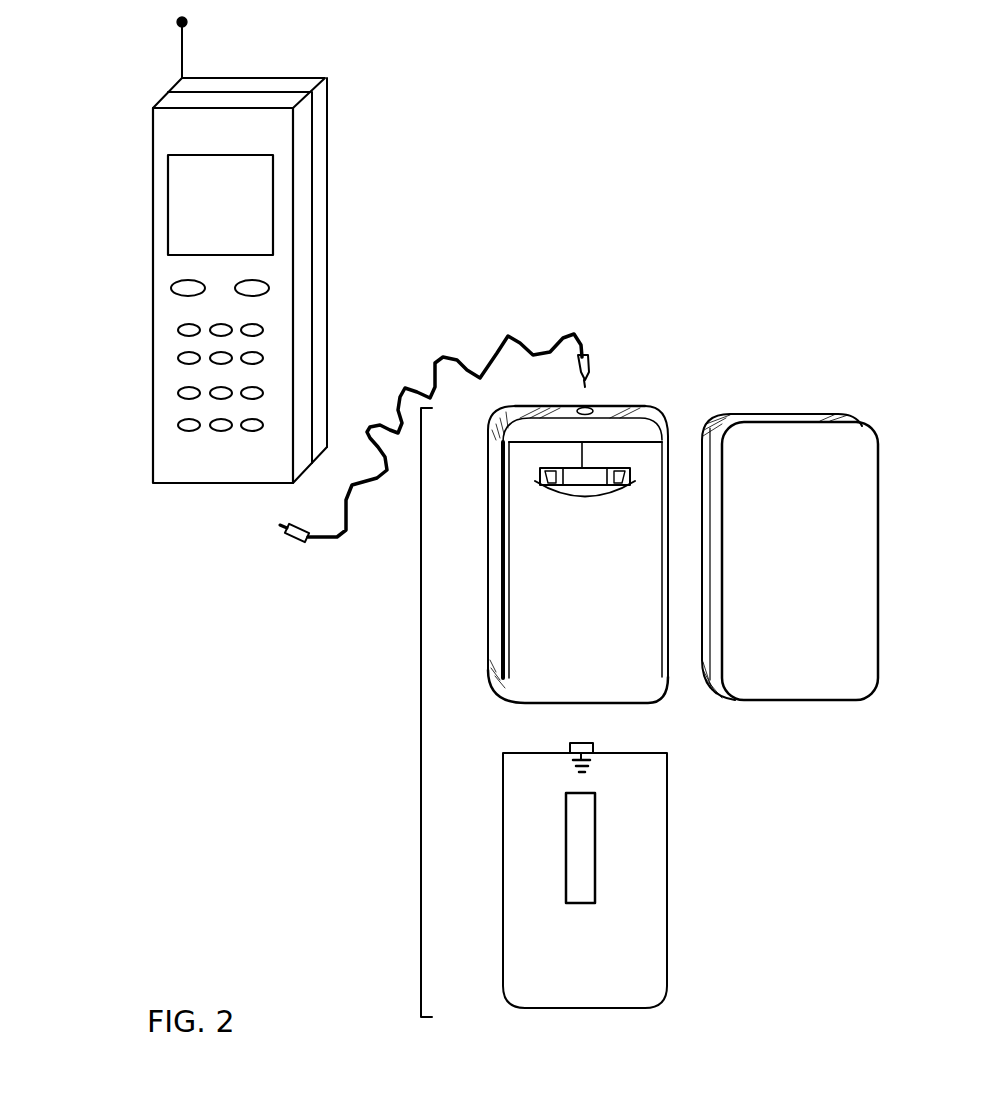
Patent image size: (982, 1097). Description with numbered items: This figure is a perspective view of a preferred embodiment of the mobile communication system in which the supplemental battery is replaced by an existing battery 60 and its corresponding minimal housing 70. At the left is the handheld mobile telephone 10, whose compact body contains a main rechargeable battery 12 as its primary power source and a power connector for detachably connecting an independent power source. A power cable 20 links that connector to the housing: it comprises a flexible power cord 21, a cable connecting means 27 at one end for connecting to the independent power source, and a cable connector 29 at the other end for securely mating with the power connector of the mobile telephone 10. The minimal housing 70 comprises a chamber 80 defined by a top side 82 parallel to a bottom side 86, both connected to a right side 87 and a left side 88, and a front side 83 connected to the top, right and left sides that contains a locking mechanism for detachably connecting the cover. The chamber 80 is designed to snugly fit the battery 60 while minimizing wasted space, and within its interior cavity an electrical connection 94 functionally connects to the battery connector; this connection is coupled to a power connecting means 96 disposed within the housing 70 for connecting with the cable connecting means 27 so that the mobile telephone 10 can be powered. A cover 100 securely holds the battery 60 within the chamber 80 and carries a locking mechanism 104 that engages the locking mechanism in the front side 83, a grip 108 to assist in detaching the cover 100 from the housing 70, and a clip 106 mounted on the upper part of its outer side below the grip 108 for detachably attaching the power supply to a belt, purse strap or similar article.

The handheld mobile telephone 10 is at (138, 272).
The main rechargeable battery 12 is at (327, 163).
The power cable 20 is at (404, 360).
The flexible power cord 21 is at (462, 360).
The cable connecting means 27 is at (590, 360).
The cable connector 29 is at (288, 535).
The existing battery 60 is at (797, 728).
The minimal housing 70 is at (398, 646).
The chamber 80 is at (527, 576).
The top side 82 is at (650, 417).
The front side 83 is at (547, 435).
The bottom side 86 is at (565, 703).
The right side 87 is at (671, 450).
The left side 88 is at (497, 517).
The electrical connection 94 is at (515, 460).
The power connecting means 96 is at (577, 407).
The cover 100 is at (487, 848).
The locking mechanism 104 is at (593, 748).
The clip 106 is at (580, 888).
The grip 108 is at (590, 765).